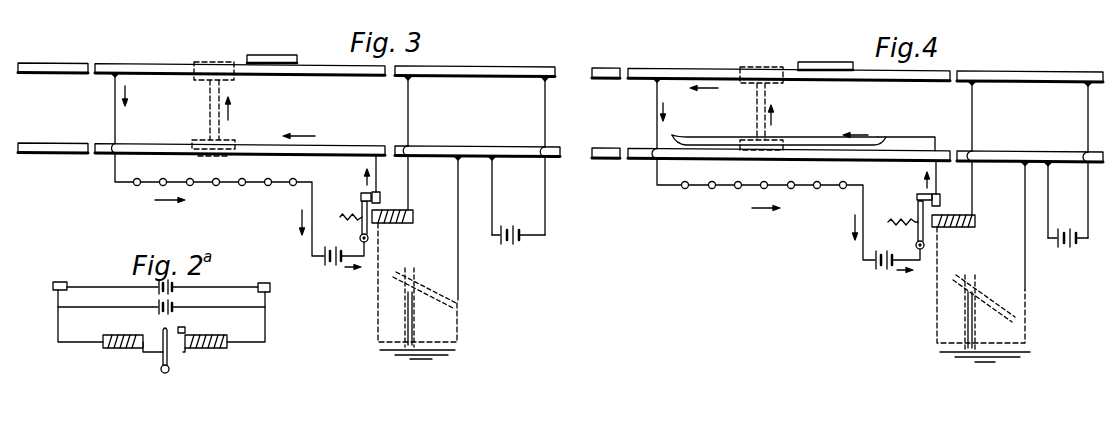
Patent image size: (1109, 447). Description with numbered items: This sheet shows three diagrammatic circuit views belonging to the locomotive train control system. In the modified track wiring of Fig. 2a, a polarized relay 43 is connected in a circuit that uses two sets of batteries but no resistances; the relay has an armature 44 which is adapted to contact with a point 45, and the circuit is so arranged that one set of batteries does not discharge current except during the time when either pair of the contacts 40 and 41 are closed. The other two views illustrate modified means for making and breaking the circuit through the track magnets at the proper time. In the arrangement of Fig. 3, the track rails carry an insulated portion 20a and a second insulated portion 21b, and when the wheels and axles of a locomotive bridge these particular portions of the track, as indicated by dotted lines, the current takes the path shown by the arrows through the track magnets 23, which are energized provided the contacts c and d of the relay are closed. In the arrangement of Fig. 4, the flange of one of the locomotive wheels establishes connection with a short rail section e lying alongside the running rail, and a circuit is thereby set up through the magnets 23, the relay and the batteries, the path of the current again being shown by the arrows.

In FIG. 3, the insulated track portion 20a is at (162, 57).
In FIG. 3, the insulated track portion 21b is at (168, 143).
In FIG. 3, the track magnets 23 is at (216, 183).
In FIG. 4, the track magnets 23 is at (727, 187).
In FIG. 3, the contact c is at (361, 197).
In FIG. 3, the contact d is at (381, 196).
In FIG. 4, the short rail section e is at (830, 128).
In FIG. 2A, the contact 40 is at (78, 287).
In FIG. 2A, the contact 41 is at (62, 282).
In FIG. 2A, the polarized relay 43 is at (218, 350).
In FIG. 2A, the armature 44 is at (160, 368).
In FIG. 2A, the contact point 45 is at (186, 330).